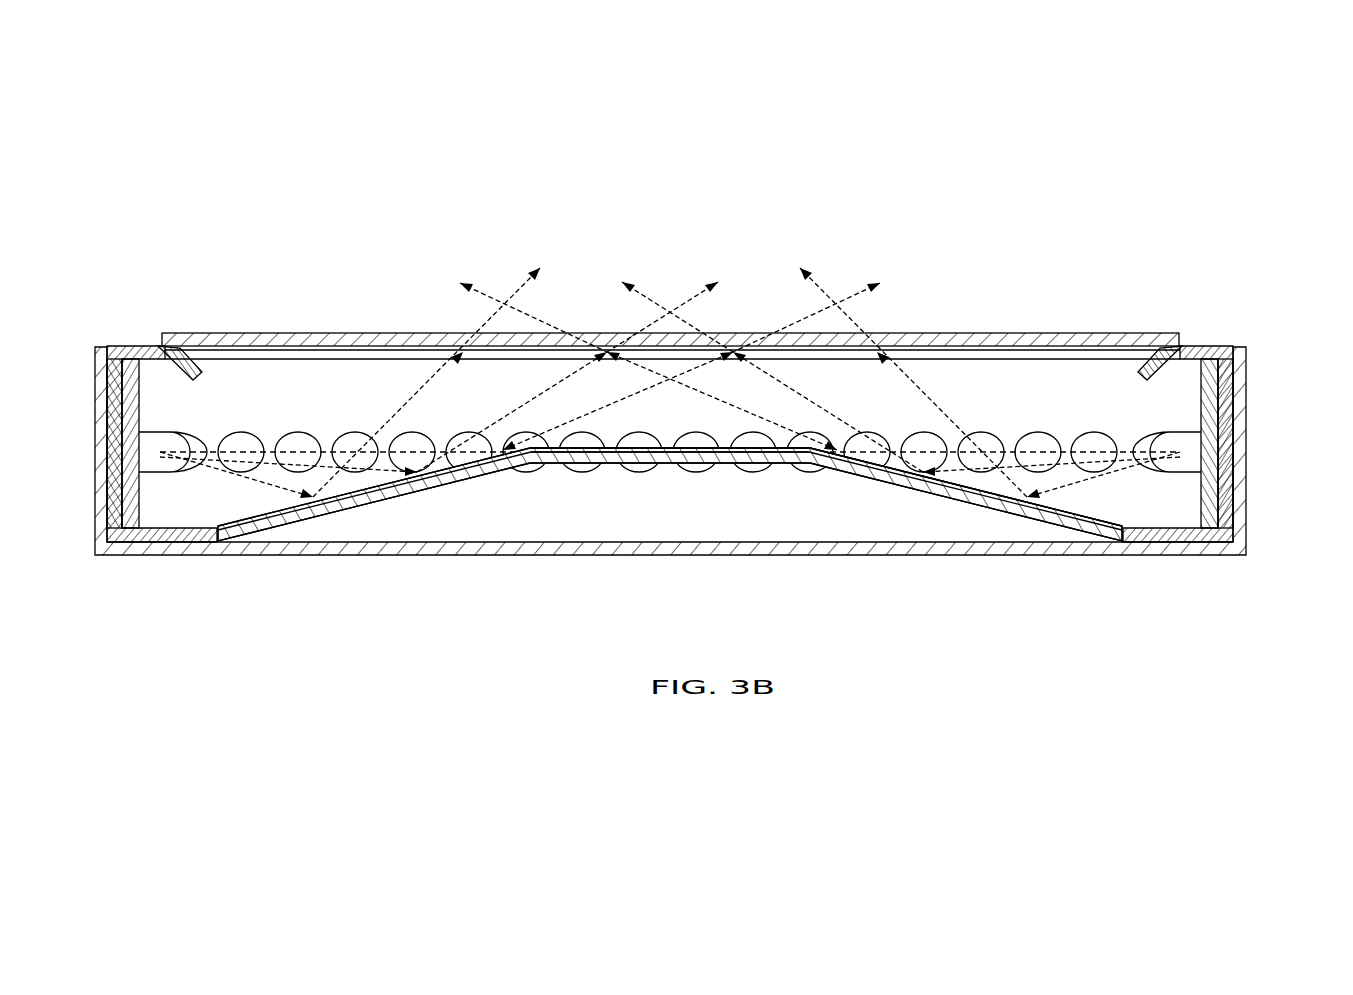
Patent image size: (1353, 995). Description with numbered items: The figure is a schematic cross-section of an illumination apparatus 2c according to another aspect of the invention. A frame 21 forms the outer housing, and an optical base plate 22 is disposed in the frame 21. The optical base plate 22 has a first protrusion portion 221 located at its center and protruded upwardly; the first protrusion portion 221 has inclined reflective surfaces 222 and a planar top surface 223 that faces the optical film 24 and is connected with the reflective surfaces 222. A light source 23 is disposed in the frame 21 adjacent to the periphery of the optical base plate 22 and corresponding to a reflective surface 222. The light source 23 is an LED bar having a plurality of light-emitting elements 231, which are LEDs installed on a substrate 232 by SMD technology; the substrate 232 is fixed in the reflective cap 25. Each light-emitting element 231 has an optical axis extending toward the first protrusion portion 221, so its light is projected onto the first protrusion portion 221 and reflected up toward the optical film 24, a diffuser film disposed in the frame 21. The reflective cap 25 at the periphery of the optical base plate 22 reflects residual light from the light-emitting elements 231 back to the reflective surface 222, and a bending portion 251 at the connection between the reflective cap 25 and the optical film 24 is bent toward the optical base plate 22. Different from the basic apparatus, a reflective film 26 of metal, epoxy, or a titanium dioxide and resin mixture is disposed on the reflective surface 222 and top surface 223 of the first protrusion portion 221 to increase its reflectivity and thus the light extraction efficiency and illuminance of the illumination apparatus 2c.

The illumination apparatus 2c is at (276, 193).
The frame 21 is at (1243, 373).
The optical base plate 22 is at (730, 468).
The first protrusion portion 221 is at (670, 491).
The reflective surface 222 is at (1078, 517).
The top surface 223 is at (668, 447).
The light source 23 is at (1300, 440).
The light-emitting element 231 is at (297, 437).
The substrate 232 is at (1213, 484).
The optical film 24 is at (1087, 333).
The reflective cap 25 is at (1216, 347).
The bending portion 251 is at (197, 357).
The reflective film 26 is at (732, 447).